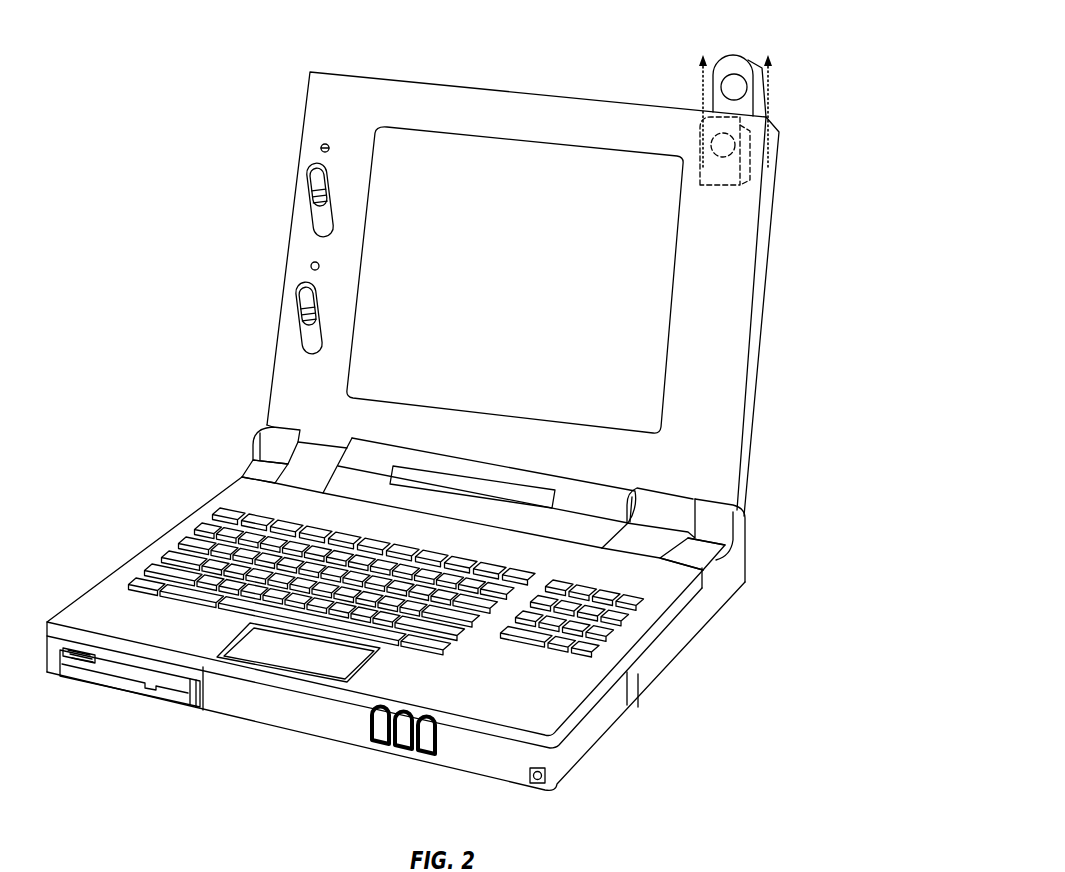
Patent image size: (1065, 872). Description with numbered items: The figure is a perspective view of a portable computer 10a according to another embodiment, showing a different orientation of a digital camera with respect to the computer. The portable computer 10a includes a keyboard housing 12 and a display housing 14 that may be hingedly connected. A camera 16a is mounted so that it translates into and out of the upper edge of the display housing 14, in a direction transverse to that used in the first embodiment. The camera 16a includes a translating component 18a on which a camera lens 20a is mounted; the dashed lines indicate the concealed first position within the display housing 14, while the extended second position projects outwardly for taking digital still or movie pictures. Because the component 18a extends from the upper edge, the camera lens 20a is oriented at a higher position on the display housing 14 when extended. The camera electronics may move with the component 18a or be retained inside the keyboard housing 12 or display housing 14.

The portable computer 10a is at (548, 54).
The keyboard housing 12 is at (638, 625).
The display housing 14 is at (738, 330).
The camera 16a is at (838, 54).
The translating component 18a is at (724, 67).
The camera lens 20a is at (735, 90).